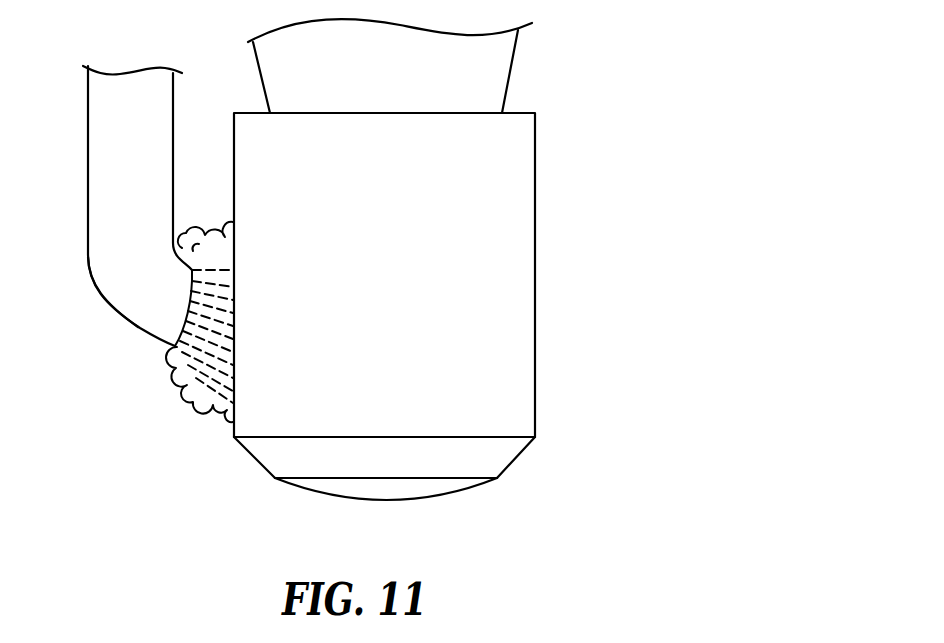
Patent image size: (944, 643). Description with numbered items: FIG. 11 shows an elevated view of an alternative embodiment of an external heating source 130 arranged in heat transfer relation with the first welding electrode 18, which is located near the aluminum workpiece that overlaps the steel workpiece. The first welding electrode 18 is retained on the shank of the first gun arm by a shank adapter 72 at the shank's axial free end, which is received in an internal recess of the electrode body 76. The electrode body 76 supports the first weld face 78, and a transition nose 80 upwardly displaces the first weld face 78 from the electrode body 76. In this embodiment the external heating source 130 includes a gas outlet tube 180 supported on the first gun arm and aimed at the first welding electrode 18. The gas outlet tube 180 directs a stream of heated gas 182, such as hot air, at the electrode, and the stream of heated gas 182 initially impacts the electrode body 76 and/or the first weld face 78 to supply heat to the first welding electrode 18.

The first welding electrode 18 is at (250, 490).
The shank adapter 72 is at (493, 78).
The electrode body 76 is at (512, 210).
The first weld face 78 is at (385, 503).
The transition nose 80 is at (500, 452).
The external heating source 130 is at (103, 183).
The gas outlet tube 180 is at (130, 302).
The stream of heated gas 182 is at (215, 358).